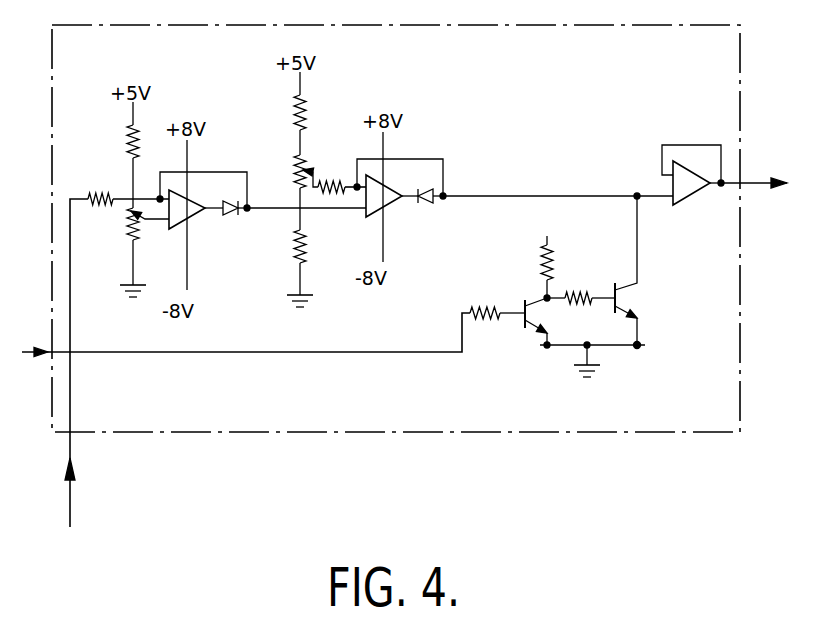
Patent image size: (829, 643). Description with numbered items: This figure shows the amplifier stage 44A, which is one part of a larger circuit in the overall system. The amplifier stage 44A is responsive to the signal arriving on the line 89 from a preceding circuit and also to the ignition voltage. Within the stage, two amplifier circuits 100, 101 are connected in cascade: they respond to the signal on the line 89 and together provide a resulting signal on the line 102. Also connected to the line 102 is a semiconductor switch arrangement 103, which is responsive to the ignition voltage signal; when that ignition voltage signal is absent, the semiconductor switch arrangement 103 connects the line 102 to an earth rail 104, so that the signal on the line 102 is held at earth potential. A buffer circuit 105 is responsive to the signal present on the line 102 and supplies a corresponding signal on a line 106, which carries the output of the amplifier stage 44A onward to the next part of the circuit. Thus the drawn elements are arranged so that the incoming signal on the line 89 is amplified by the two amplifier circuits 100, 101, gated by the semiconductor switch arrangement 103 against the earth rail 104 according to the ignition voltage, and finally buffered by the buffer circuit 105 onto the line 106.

The amplifier stage 44A is at (163, 407).
The line 89 is at (70, 493).
The amplifier circuit 100 is at (180, 208).
The amplifier circuit 101 is at (385, 200).
The line 102 is at (560, 193).
The semiconductor switch arrangement 103 is at (530, 355).
The earth rail 104 is at (620, 346).
The buffer circuit 105 is at (685, 188).
The line 106 is at (750, 187).